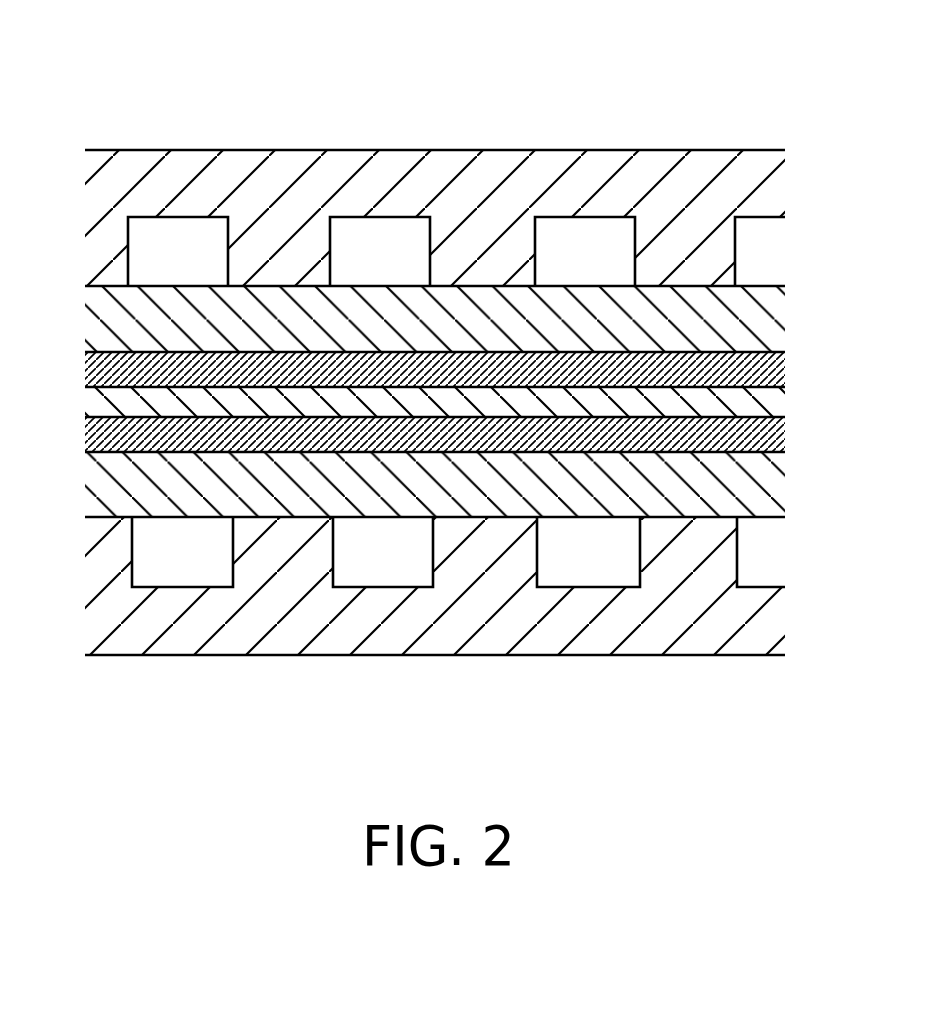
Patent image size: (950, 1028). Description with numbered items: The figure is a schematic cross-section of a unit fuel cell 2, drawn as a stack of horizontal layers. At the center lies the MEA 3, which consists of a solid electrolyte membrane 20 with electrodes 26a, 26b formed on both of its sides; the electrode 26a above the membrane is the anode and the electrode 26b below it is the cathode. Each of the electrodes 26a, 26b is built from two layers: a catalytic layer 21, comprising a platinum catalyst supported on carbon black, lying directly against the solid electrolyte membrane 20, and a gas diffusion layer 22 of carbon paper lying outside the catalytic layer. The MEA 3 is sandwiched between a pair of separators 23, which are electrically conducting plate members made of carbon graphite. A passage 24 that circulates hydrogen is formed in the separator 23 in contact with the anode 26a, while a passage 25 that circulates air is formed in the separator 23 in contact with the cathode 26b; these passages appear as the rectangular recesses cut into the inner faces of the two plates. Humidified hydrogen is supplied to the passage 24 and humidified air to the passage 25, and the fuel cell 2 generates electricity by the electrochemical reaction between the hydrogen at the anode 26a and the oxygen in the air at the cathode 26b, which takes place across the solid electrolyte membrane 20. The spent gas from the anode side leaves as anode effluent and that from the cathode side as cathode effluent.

The fuel cell 2 is at (367, 100).
The MEA 3 is at (62, 287).
The solid electrolyte membrane 20 is at (453, 400).
The catalytic layer 21 is at (273, 372).
The gas diffusion layer 22 is at (167, 313).
The separator 23 is at (543, 177).
The passage 24 is at (583, 565).
The passage 25 is at (618, 243).
The anode 26a is at (805, 283).
The cathode 26b is at (805, 413).